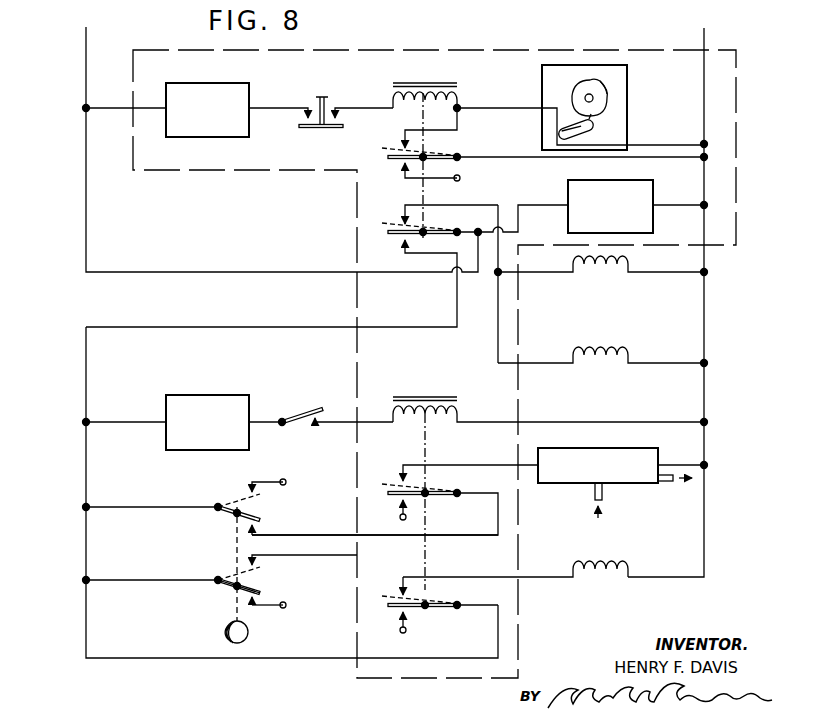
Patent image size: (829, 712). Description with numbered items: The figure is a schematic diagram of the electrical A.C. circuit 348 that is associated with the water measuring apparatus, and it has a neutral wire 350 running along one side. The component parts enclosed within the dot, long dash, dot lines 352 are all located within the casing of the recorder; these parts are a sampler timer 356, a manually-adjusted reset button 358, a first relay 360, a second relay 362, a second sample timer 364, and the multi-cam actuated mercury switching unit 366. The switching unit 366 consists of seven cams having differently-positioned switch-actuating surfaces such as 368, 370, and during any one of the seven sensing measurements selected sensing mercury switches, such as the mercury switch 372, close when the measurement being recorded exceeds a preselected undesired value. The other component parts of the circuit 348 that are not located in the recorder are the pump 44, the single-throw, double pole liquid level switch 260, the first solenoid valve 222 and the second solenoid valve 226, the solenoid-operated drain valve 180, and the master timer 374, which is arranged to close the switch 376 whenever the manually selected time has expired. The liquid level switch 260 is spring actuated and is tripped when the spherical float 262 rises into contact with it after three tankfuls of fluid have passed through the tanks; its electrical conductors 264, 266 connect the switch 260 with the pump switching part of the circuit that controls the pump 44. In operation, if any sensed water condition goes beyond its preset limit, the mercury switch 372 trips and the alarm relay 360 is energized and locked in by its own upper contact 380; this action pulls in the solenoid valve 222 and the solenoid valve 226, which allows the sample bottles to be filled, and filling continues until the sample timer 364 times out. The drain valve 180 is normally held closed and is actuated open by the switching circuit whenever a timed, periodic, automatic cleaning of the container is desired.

The pump 44 is at (575, 484).
The solenoid-operated valve 180 is at (601, 573).
The first solenoid valve 222 is at (601, 266).
The second solenoid valve 226 is at (604, 357).
The spring-actuated single-throw double pole switch 260 is at (214, 594).
The spherical float 262 is at (250, 632).
The electrical conductor 264 is at (163, 509).
The electrical conductor 266 is at (298, 535).
The electrical A.C. circuit 348 is at (80, 297).
The neutral wire 350 is at (704, 82).
The dot, long dash, dot lines 352 is at (405, 48).
The sampler timer 356 is at (204, 83).
The manually-adjusted reset button 358 is at (323, 128).
The first relay 360 is at (412, 94).
The second relay 362 is at (436, 416).
The second sample timer 364 is at (578, 180).
The turbidity sensor switching unit 366 is at (627, 88).
The switch-actuating surface 368 is at (578, 78).
The switch-actuating surface 370 is at (603, 80).
The sensing mercury switch 372 is at (560, 135).
The master timer 374 is at (203, 395).
The switch 376 is at (299, 415).
The upper contact 380 is at (388, 152).